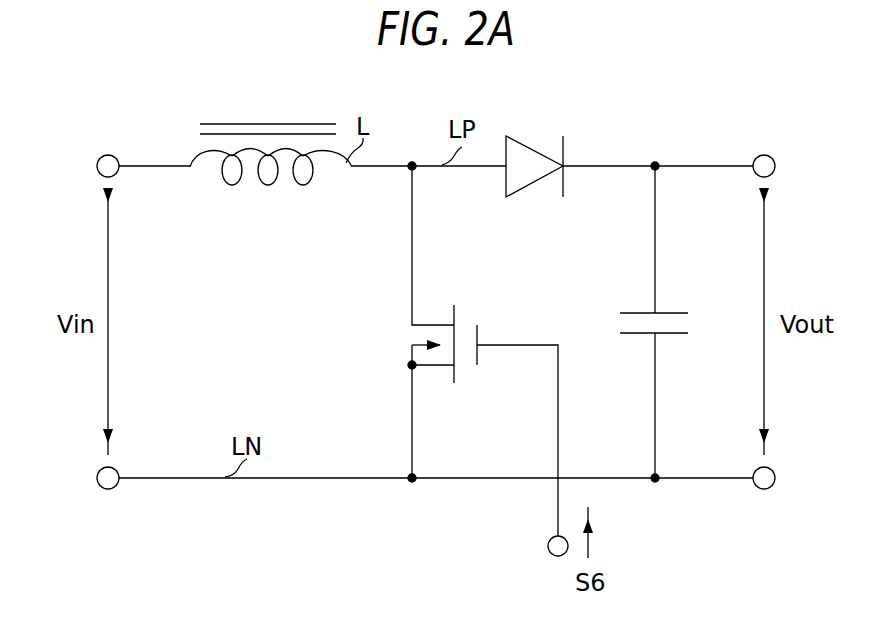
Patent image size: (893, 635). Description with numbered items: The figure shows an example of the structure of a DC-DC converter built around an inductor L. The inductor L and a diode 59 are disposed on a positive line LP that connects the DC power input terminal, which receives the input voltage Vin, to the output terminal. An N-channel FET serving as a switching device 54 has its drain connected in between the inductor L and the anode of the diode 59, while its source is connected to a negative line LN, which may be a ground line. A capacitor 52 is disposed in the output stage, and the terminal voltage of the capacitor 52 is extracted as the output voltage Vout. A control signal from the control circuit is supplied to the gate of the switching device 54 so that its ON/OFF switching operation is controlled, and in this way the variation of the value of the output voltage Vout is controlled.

The diode 59 is at (524, 138).
The switching device 54 is at (455, 317).
The capacitor 52 is at (669, 312).